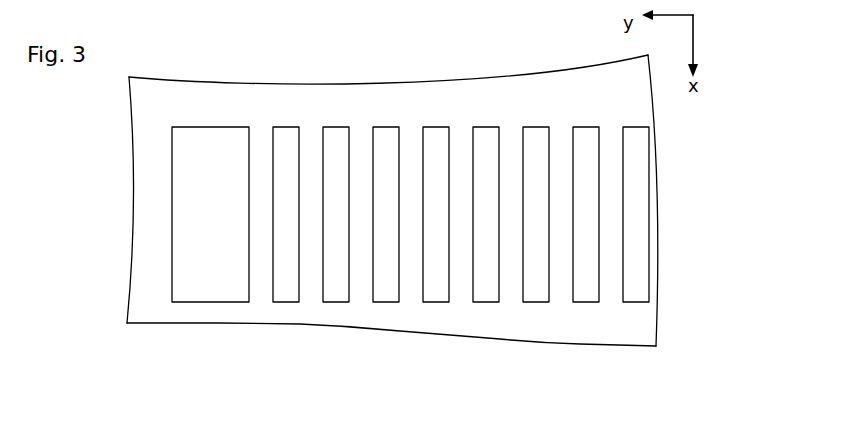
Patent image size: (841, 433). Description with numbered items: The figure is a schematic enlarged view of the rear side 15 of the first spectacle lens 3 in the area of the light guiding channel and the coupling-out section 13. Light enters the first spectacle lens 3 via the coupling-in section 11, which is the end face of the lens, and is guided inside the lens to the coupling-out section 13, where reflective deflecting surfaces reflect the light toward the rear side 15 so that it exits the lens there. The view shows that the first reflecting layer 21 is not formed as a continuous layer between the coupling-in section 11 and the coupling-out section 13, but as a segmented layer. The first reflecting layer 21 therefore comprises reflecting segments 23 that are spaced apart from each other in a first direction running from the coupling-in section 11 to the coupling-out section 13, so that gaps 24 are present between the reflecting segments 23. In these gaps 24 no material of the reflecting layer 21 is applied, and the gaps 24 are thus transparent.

The first spectacle lens 3 is at (133, 305).
The coupling-in section 11 is at (658, 173).
The coupling-out section 13 is at (213, 157).
The rear side 15 is at (164, 108).
The first reflecting layer 21 is at (266, 124).
The reflecting segments 23 is at (282, 147).
The gaps 24 is at (262, 290).